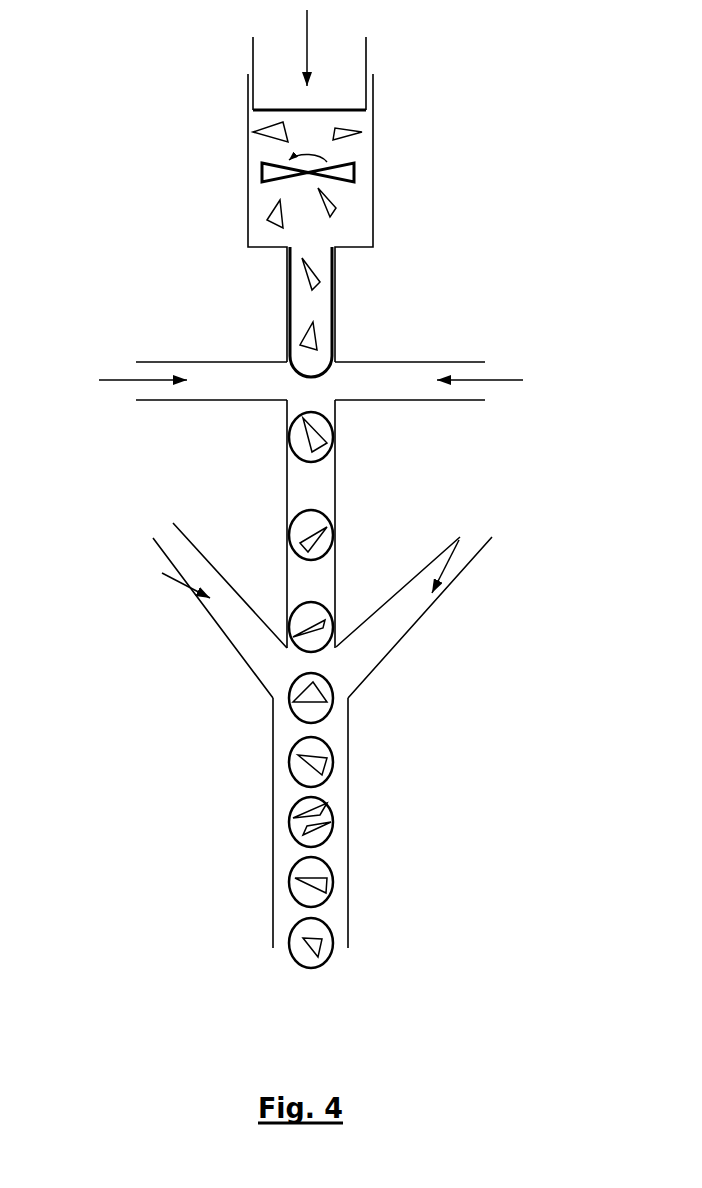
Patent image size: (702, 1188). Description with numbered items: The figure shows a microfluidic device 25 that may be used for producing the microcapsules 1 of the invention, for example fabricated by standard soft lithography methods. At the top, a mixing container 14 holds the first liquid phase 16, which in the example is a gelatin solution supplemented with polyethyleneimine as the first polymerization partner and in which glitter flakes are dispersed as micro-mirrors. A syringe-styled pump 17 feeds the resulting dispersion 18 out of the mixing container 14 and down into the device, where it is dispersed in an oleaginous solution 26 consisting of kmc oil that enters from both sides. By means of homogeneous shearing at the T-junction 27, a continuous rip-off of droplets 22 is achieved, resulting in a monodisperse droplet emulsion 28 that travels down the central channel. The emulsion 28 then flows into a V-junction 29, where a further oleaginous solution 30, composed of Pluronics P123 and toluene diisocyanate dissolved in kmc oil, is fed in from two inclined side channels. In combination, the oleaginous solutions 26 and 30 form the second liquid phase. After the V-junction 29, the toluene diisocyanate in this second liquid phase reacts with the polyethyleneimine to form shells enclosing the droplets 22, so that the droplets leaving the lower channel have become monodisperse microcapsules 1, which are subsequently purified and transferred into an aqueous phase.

The microcapsules 1 is at (335, 877).
The mixing container 14 is at (375, 223).
The first liquid phase 16 is at (260, 150).
The syringe-styled pump 17 is at (243, 107).
The dispersion 18 is at (320, 308).
The droplets 22 is at (332, 518).
The microfluidic device 25 is at (403, 217).
The oleaginous solution 26 is at (122, 378).
The T-junction 27 is at (280, 407).
The monodisperse droplet emulsion 28 is at (325, 573).
The V-junction 29 is at (268, 703).
The further oleaginous solution 30 is at (153, 539).